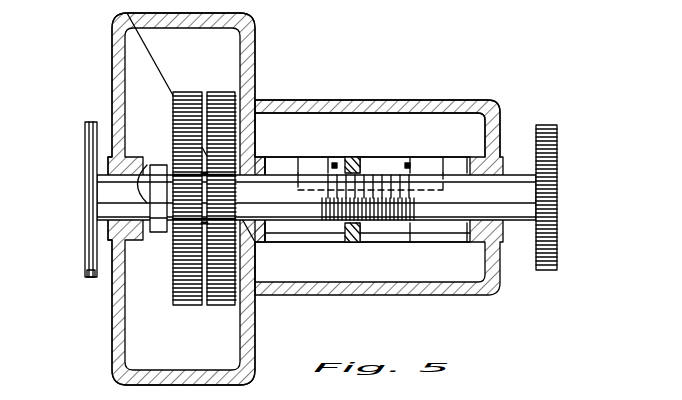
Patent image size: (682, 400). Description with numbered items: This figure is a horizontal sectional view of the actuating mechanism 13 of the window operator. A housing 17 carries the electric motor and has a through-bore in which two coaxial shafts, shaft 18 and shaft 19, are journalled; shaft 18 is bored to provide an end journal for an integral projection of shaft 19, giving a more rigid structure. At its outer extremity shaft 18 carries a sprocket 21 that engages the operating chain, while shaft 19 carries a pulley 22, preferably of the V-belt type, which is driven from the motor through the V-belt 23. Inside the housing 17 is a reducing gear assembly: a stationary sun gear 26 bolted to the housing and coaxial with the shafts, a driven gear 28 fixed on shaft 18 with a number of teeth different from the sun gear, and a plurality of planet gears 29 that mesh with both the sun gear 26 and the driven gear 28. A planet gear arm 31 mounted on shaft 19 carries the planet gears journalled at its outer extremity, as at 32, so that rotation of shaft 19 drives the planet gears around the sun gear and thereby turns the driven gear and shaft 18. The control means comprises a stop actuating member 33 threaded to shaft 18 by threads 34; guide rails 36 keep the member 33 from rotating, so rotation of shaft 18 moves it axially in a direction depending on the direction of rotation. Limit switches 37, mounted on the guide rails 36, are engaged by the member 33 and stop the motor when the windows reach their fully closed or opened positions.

The actuating mechanism 13 is at (498, 108).
The housing 17 is at (390, 100).
The shaft 18 is at (293, 220).
The shaft 19 is at (110, 200).
The sprocket 21 is at (546, 272).
The pulley 22 is at (85, 163).
The V-belt 23 is at (92, 277).
The sun gear 26 is at (242, 97).
The driven gear 28 is at (188, 95).
The planet gears 29 is at (187, 222).
The planet gear arm 31 is at (163, 165).
The planet gear journal 32 is at (141, 166).
The stop actuating member 33 is at (357, 160).
The threads 34 is at (383, 223).
The guide rails 36 is at (402, 152).
The limit switches 37 is at (312, 163).